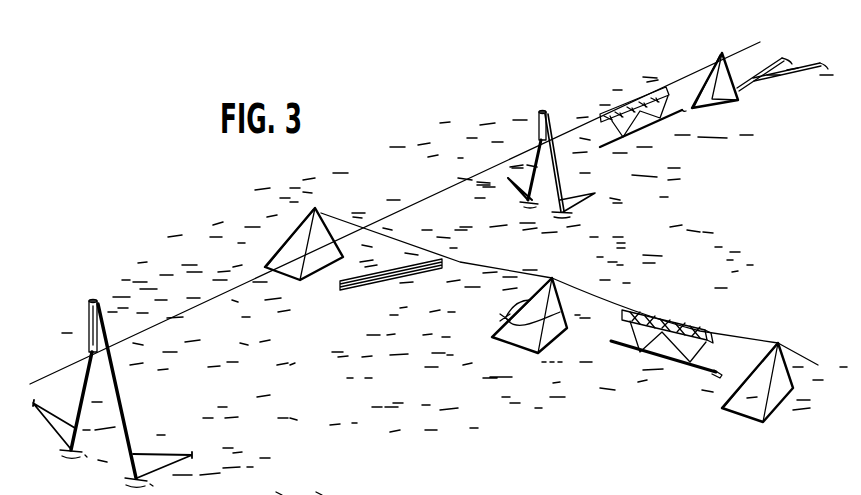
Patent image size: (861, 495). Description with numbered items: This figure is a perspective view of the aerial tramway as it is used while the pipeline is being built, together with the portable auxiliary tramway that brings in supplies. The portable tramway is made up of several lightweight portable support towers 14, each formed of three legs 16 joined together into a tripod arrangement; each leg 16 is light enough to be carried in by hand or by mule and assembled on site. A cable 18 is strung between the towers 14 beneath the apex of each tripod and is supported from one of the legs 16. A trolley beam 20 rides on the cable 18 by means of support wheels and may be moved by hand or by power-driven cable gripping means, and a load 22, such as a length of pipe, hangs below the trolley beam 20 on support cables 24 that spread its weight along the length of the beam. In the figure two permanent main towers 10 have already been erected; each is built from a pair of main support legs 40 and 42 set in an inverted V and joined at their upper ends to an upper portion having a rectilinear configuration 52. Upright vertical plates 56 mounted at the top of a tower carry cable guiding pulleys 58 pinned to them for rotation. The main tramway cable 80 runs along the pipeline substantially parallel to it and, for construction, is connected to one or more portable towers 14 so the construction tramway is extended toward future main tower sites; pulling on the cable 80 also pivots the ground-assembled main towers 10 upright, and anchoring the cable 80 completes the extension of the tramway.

The main tower 10 is at (430, 272).
The portable support tower 14 is at (318, 206).
The leg 16 is at (504, 317).
The cable 18 is at (493, 267).
The trolley beam 20 is at (674, 313).
The load 22 is at (634, 347).
The support cable 24 is at (704, 351).
The main support leg 40 is at (118, 400).
The main support leg 42 is at (76, 398).
The rectilinear configuration 52 is at (88, 324).
The upright vertical plate 56 is at (318, 494).
The cable guiding pulley 58 is at (278, 494).
The tramway cable 80 is at (196, 306).